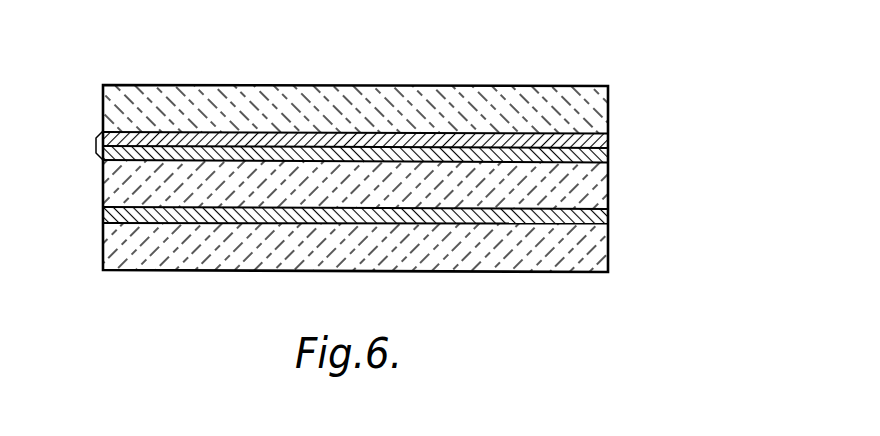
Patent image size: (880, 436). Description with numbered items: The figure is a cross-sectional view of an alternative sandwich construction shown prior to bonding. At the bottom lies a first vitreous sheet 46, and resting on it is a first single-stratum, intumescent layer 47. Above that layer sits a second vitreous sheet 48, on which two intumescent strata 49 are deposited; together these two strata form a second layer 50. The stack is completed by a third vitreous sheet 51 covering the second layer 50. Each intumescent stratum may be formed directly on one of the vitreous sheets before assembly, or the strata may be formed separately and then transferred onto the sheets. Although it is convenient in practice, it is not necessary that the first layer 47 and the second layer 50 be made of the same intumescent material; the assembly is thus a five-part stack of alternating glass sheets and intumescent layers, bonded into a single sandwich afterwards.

The first vitreous sheet 46 is at (587, 250).
The first single-stratum intumescent layer 47 is at (607, 217).
The second vitreous sheet 48 is at (123, 170).
The intumescent strata 49 is at (611, 151).
The second layer 50 is at (94, 148).
The third vitreous sheet 51 is at (135, 103).